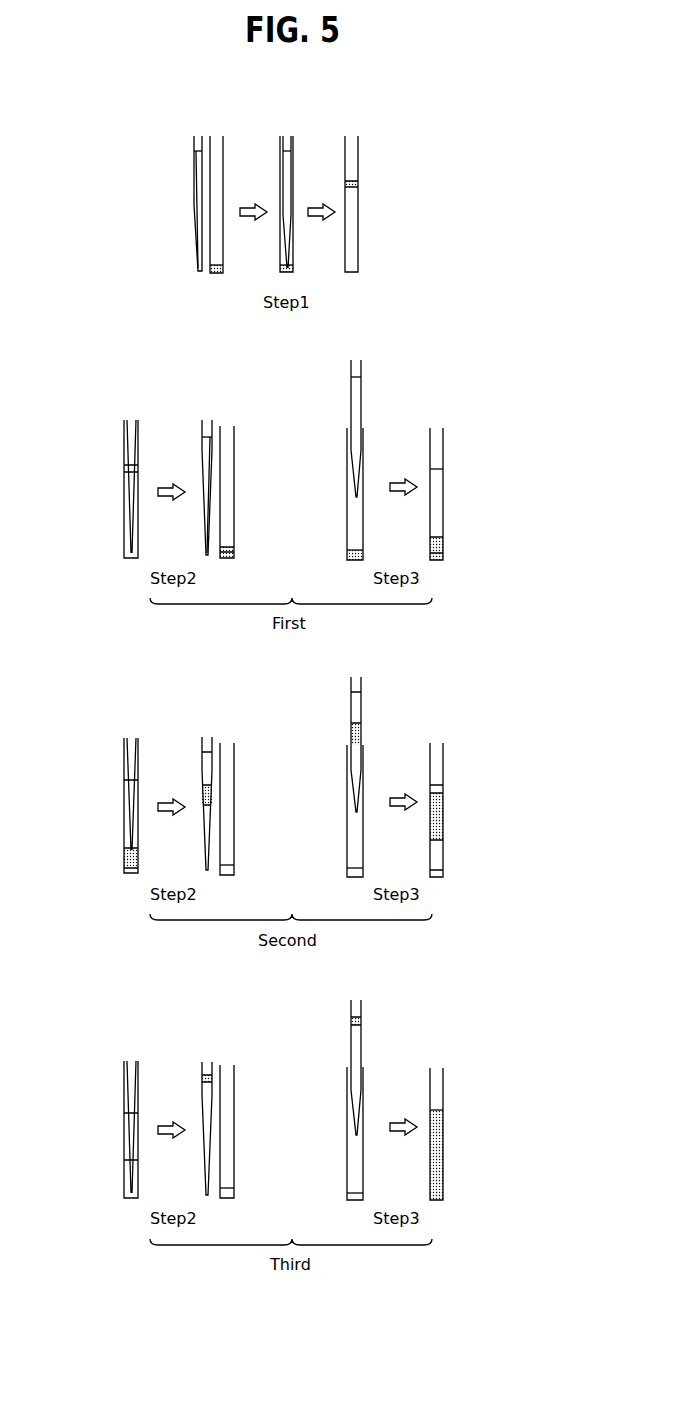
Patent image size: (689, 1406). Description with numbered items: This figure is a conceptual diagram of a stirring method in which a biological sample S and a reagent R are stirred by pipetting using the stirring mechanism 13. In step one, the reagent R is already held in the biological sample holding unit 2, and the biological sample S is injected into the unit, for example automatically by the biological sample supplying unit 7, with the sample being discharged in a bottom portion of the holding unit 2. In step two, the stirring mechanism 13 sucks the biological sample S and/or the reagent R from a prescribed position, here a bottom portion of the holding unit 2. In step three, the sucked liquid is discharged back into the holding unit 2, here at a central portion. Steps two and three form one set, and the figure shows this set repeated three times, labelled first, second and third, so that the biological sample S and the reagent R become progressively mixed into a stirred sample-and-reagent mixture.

The biological sample supplying unit 7 is at (197, 151).
The biological sample holding unit 2 is at (223, 160).
The stirring mechanism 13 is at (124, 420).
The biological sample S is at (194, 198).
The reagent R is at (216, 273).